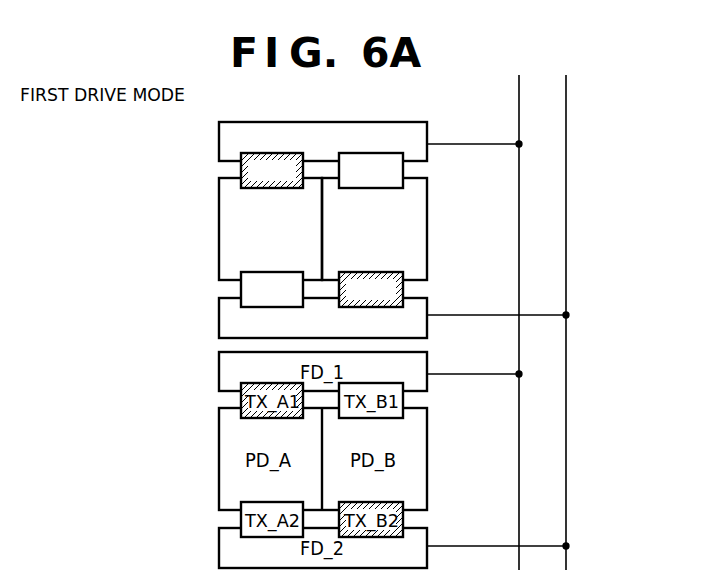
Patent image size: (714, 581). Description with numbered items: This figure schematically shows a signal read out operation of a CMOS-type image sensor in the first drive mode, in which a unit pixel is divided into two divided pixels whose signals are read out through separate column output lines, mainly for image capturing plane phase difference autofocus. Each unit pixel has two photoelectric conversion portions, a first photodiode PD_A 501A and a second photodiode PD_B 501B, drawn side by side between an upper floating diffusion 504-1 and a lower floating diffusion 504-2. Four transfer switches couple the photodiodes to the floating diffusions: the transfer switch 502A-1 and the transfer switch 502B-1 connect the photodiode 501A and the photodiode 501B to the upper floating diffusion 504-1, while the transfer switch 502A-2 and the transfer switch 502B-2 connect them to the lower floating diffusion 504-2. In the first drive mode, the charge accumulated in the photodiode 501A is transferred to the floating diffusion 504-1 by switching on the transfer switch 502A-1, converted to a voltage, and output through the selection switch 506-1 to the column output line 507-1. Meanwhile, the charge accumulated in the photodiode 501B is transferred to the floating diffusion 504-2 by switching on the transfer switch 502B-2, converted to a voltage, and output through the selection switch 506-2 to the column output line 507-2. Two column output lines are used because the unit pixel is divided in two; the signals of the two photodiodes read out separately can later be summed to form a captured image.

The FD_1 (floating diffusion) 504-1 is at (219, 147).
The FD_2 (floating diffusion) 504-2 is at (219, 318).
The transfer switch TX_A1 502A-1 is at (240, 172).
The transfer switch TX_B1 502B-1 is at (405, 173).
The transfer switch TX_A2 502A-2 is at (240, 290).
The transfer switch TX_B2 502B-2 is at (405, 289).
The PD_A (photoelectric conversion portion) 501A is at (218, 231).
The PD_B (photoelectric conversion portion) 501B is at (427, 231).
The selection switch 506-1 is at (460, 143).
The selection switch 506-2 is at (460, 317).
The column output line 507-1 is at (518, 84).
The column output line 507-2 is at (566, 84).